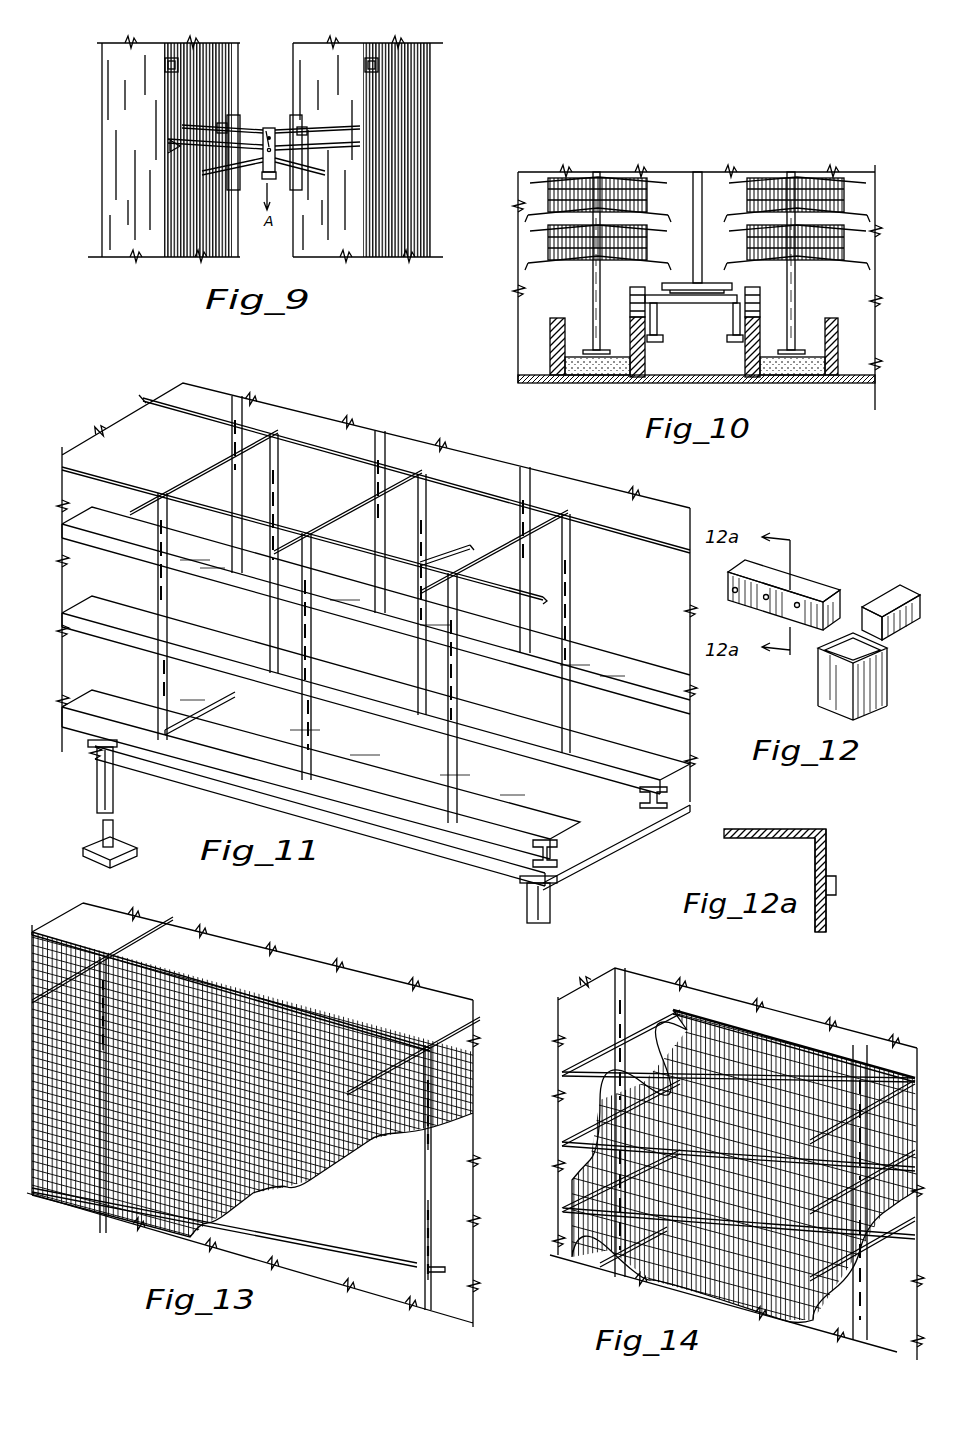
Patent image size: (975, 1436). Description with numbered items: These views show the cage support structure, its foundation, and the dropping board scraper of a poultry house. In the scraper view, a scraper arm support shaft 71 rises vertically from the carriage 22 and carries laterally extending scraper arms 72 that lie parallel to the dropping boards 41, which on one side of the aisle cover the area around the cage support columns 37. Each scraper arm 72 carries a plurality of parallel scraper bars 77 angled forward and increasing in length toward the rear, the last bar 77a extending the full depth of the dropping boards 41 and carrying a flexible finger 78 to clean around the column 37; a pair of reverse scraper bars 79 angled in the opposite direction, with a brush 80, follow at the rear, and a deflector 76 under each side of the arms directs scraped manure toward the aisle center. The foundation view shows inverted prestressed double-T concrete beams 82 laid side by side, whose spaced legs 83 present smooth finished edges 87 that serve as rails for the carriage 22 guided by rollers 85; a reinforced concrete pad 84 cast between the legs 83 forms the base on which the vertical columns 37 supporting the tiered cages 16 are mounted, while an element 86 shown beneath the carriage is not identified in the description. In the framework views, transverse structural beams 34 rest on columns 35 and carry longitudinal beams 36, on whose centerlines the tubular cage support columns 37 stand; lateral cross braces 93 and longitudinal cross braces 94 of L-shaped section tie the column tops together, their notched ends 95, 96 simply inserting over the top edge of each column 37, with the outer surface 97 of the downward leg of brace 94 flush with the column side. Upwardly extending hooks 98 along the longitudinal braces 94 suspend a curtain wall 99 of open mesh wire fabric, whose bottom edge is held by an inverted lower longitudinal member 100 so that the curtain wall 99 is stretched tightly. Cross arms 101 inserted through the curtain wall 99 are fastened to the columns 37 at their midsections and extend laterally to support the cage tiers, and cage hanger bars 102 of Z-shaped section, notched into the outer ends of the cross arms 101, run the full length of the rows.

In FIG. 9, the cage support column 37 is at (172, 55).
In FIG. 10, the cage support column 37 is at (593, 295).
In FIG. 11, the cage support column 37 is at (155, 600).
In FIG. 12, the cage support column 37 is at (870, 700).
In FIG. 13, the cage support column 37 is at (97, 1190).
In FIG. 14, the cage support column 37 is at (612, 1018).
In FIG. 9, the dropping board 41 is at (430, 50).
In FIG. 9, the scraper arm support shaft 71 is at (272, 128).
In FIG. 9, the scraper arm 72 is at (263, 179).
In FIG. 9, the deflector 76 is at (247, 108).
In FIG. 9, the scraper bar 77 is at (320, 170).
In FIG. 9, the last scraper bar 77a is at (168, 140).
In FIG. 9, the flexible finger 78 is at (170, 150).
In FIG. 9, the reverse scraper bar 79 is at (190, 126).
In FIG. 9, the brush 80 is at (222, 124).
In FIG. 10, the tiered cages 16 is at (548, 233).
In FIG. 10, the servicing carriage 22 is at (712, 274).
In FIG. 10, the prestressed double-T concrete beam 82 is at (560, 385).
In FIG. 10, the leg 83 is at (553, 350).
In FIG. 10, the reinforced concrete pad 84 is at (588, 380).
In FIG. 10, the guide roller 85 is at (727, 339).
In FIG. 10, the cross bar 86 is at (660, 316).
In FIG. 10, the outer edge 87 is at (632, 303).
In FIG. 11, the structural beam 34 is at (205, 700).
In FIG. 11, the column 35 is at (113, 790).
In FIG. 11, the longitudinal beam 36 is at (647, 655).
In FIG. 11, the lateral cross brace 93 is at (190, 478).
In FIG. 12, the lateral cross brace 93 is at (891, 590).
In FIG. 13, the lateral cross brace 93 is at (148, 937).
In FIG. 11, the longitudinal cross brace 94 is at (197, 417).
In FIG. 12, the longitudinal cross brace 94 is at (787, 609).
In FIG. 12A, the longitudinal cross brace 94 is at (794, 875).
In FIG. 13, the longitudinal cross brace 94 is at (265, 993).
In FIG. 12, the end of lateral cross brace 95 is at (885, 636).
In FIG. 12, the end of longitudinal cross brace 96 is at (815, 628).
In FIG. 12A, the outer surface 97 is at (826, 848).
In FIG. 12, the hook 98 is at (762, 600).
In FIG. 12A, the hook 98 is at (838, 884).
In FIG. 13, the curtain wall 99 is at (303, 1043).
In FIG. 14, the curtain wall 99 is at (770, 1060).
In FIG. 13, the lower longitudinal member 100 is at (262, 1233).
In FIG. 14, the cross arm 101 is at (637, 1000).
In FIG. 14, the cage hanger bar 102 is at (707, 1007).